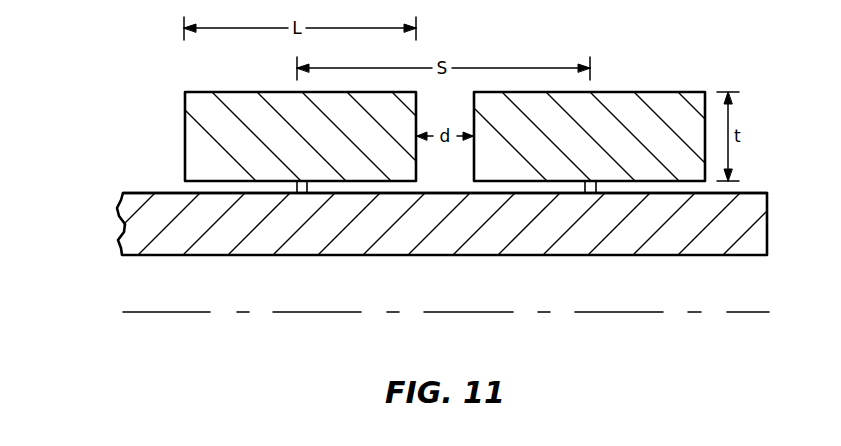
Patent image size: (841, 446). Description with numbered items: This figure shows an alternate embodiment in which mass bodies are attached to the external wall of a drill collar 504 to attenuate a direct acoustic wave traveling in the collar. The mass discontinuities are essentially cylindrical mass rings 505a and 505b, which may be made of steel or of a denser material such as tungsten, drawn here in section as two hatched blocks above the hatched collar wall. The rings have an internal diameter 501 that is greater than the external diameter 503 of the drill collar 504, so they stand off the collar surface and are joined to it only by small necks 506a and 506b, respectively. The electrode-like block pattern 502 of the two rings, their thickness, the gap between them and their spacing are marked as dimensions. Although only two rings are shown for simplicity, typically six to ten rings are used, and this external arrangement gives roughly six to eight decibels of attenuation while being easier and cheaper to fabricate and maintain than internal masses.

The internal diameter 501 is at (208, 181).
The electrode pattern 502 is at (220, 92).
The external diameter 503 is at (751, 194).
The drill collar 504 is at (136, 223).
The mass ring 505a is at (205, 125).
The mass ring 505b is at (657, 108).
The neck 506a is at (296, 183).
The neck 506b is at (585, 183).